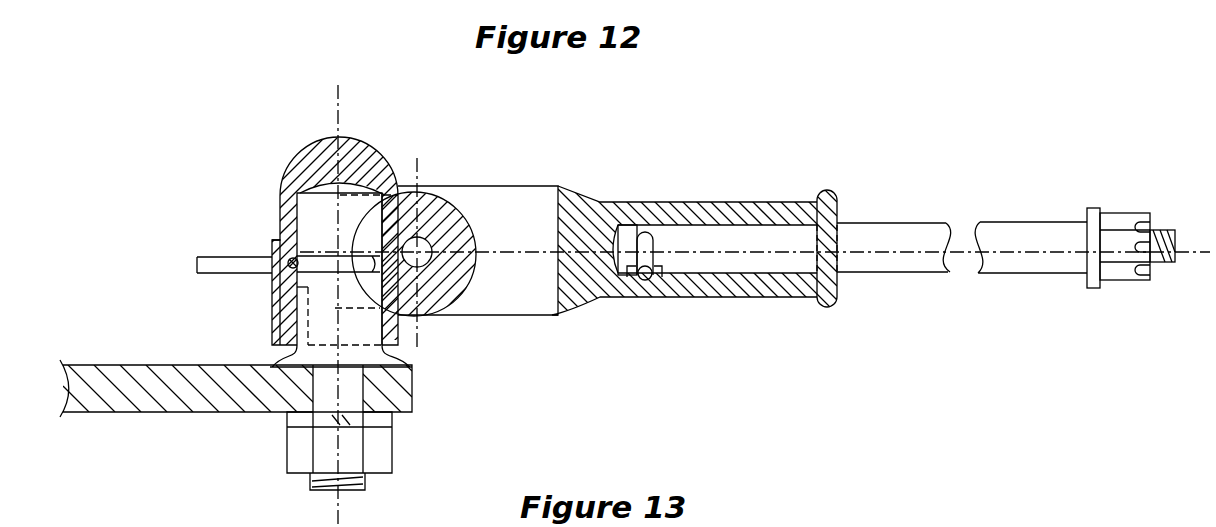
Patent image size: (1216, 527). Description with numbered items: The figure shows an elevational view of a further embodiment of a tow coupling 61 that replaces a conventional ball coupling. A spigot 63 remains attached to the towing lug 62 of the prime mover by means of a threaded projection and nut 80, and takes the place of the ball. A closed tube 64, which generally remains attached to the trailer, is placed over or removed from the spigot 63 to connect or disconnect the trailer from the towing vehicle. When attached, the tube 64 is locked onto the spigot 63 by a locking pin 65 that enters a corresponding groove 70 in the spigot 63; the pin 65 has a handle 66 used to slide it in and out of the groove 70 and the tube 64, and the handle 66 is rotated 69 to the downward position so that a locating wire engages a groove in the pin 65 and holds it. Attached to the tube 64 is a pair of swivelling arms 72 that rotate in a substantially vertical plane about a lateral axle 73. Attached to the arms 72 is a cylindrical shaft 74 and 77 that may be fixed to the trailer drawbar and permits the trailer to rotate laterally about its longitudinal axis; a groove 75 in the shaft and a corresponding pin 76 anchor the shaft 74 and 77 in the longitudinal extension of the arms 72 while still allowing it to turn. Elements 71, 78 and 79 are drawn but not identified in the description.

The tow coupling 61 is at (768, 132).
The towing lug 62 is at (145, 380).
The spigot 63 is at (317, 203).
The closed tube 64 is at (378, 194).
The locking pin 65 is at (270, 240).
The handle 66 is at (237, 257).
The rotation of handle 69 is at (207, 296).
The groove 70 is at (367, 187).
The socket housing 71 is at (445, 278).
The swivelling arms 72 is at (537, 305).
The lateral axle 73 is at (467, 222).
The cylindrical shaft 74 is at (767, 263).
The groove 75 is at (652, 235).
The pin 76 is at (657, 280).
The cylindrical shaft 77 is at (1027, 230).
The flange collar 78 is at (1093, 208).
The knurled end fitting 79 is at (1128, 217).
The nut 80 is at (352, 460).